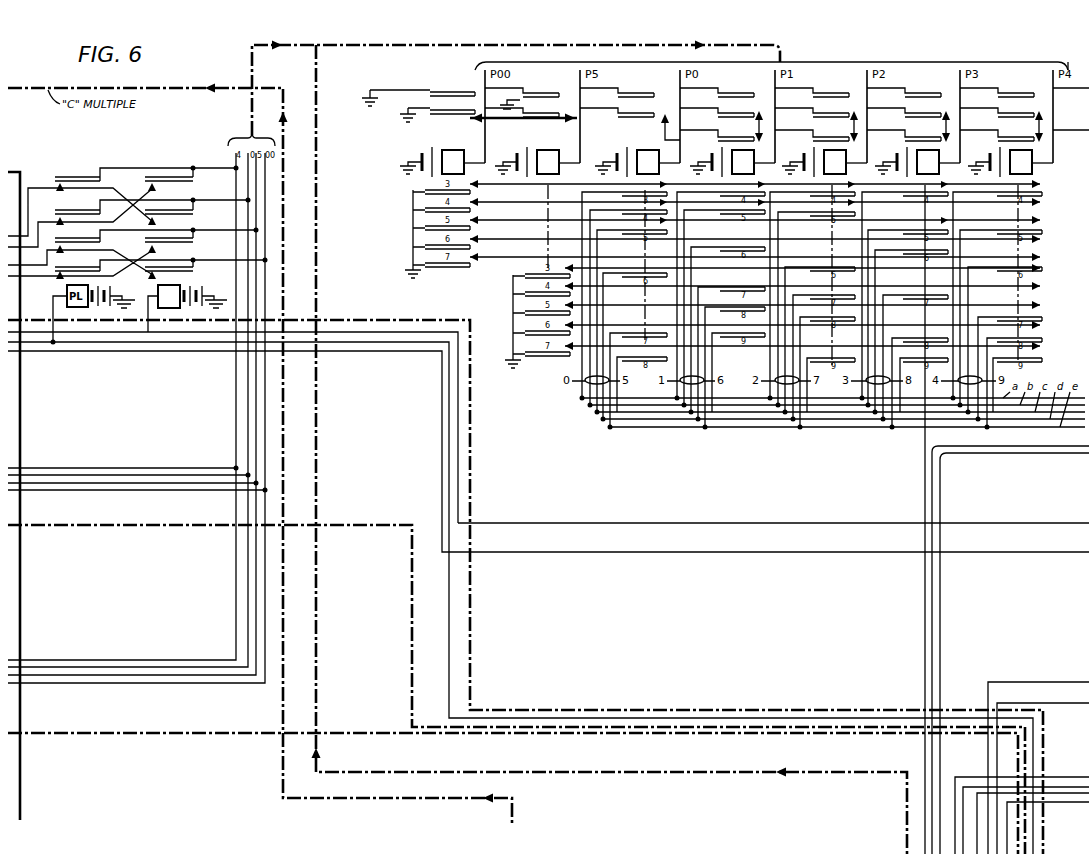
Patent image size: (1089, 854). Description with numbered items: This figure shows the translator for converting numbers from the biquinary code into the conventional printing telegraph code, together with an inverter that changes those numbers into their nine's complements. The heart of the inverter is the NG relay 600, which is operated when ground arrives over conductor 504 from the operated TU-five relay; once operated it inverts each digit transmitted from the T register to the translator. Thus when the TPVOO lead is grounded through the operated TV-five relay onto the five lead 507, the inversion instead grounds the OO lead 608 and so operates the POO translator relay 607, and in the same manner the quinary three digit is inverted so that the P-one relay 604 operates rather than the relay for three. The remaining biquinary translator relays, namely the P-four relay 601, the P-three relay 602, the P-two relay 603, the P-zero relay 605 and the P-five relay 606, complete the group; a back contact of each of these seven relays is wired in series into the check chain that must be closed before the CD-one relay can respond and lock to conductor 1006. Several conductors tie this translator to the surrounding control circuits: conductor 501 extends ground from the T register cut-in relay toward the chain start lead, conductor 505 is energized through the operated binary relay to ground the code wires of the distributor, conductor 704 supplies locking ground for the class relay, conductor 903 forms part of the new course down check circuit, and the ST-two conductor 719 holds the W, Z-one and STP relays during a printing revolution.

The conductor 501 is at (22, 405).
The conductor 504 is at (132, 344).
The conductor 505 is at (648, 527).
The 5 lead 507 is at (30, 278).
The NG relay 600 is at (165, 308).
The P4 relay 601 is at (1011, 153).
The P3 relay 602 is at (918, 153).
The P2 relay 603 is at (826, 153).
The P1 relay 604 is at (740, 150).
The P0 relay 605 is at (637, 156).
The P5 relay 606 is at (537, 156).
The P00 translator relay 607 is at (442, 156).
The OO lead 608 is at (265, 412).
The conductor 704 is at (1005, 812).
The ST-2 conductor 719 is at (1068, 128).
The conductor 903 is at (986, 790).
The conductor 1006 is at (985, 790).